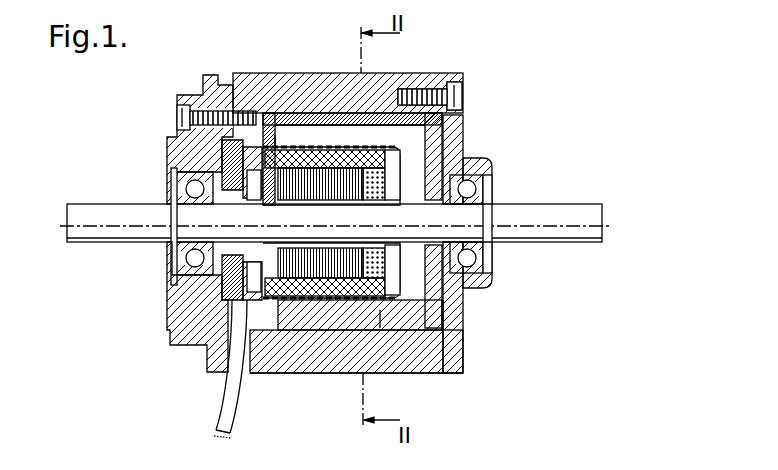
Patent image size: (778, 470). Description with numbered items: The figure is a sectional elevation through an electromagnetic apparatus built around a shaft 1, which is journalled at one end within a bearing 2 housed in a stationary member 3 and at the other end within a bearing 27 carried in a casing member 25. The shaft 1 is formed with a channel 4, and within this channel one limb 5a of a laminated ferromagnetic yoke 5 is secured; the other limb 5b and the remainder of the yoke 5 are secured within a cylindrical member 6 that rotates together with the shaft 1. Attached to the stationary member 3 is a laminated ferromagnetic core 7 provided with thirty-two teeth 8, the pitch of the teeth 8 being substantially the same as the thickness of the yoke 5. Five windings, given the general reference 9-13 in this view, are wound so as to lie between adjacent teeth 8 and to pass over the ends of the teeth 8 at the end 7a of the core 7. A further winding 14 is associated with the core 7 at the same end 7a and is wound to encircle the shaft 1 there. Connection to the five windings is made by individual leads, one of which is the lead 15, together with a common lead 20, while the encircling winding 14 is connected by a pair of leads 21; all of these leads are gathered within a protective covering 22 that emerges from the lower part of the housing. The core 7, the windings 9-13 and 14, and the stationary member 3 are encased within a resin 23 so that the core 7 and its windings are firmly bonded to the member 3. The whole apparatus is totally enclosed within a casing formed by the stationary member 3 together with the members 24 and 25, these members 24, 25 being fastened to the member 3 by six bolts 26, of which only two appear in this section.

The shaft 1 is at (578, 217).
The bearing 2 is at (172, 259).
The stationary member 3 is at (180, 152).
The channel 4 is at (452, 212).
The laminated ferromagnetic yoke 5 is at (417, 131).
The limb of yoke 5a is at (372, 208).
The limb of yoke 5b is at (337, 133).
The cylindrical member 6 is at (303, 130).
The laminated ferromagnetic core 7 is at (313, 298).
The end of core 7a is at (367, 193).
The teeth 8 is at (252, 204).
The windings 9-13 is at (296, 165).
The winding 14 is at (374, 190).
The lead 15 is at (230, 298).
The common lead 20 is at (243, 304).
The pair of leads 21 is at (228, 297).
The protective covering 22 is at (218, 419).
The resin 23 is at (341, 300).
The casing member 24 is at (430, 355).
The casing member 25 is at (455, 332).
The bolts 26 is at (175, 118).
The bearing 27 is at (470, 257).